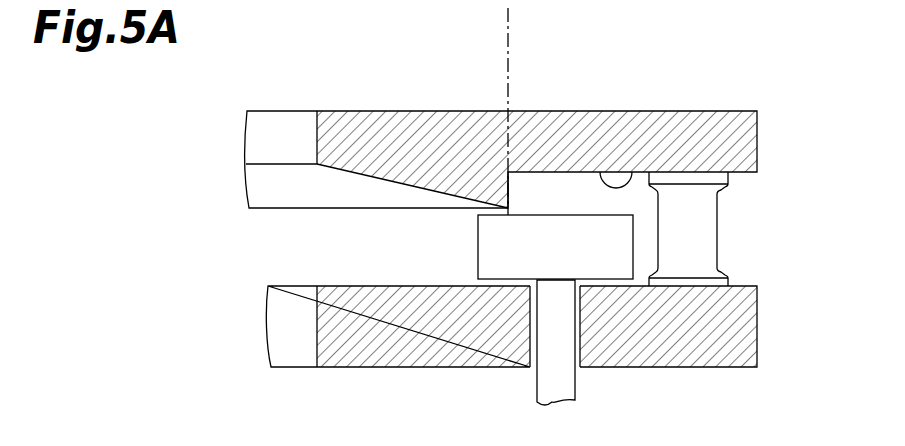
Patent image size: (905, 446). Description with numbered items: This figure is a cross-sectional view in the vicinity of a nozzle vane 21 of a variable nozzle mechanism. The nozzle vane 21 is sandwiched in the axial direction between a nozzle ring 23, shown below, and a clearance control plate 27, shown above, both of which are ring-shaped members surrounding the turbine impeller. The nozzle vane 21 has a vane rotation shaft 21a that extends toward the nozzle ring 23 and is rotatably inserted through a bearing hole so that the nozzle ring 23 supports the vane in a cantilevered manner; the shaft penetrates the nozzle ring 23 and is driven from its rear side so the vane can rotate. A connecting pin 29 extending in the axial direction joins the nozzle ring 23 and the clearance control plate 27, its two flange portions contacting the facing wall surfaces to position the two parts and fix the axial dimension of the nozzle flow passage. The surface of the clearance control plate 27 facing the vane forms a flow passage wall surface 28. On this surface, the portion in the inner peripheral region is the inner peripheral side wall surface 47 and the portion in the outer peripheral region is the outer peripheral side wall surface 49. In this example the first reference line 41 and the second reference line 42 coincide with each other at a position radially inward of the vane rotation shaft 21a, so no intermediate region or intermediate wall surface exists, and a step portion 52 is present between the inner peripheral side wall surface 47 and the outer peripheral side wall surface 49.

The clearance control plate 27 is at (745, 133).
The nozzle ring 23 is at (745, 343).
The connecting pin 29 is at (677, 228).
The nozzle vane 21 is at (478, 248).
The vane rotation shaft 21a is at (550, 345).
The step portion 52 is at (510, 190).
The outer peripheral side wall surface 49 is at (629, 171).
The inner peripheral side wall surface 47 is at (382, 180).
The flow passage wall surface 28 is at (489, 156).
The first reference line 41 is at (443, 111).
The second reference line 42 is at (507, 25).